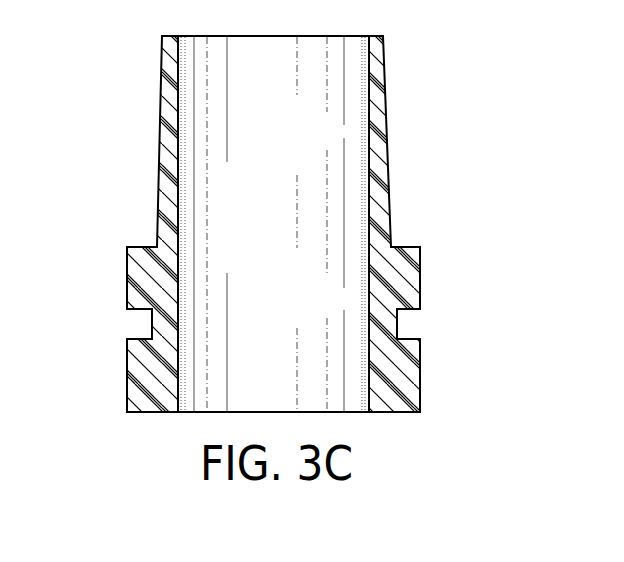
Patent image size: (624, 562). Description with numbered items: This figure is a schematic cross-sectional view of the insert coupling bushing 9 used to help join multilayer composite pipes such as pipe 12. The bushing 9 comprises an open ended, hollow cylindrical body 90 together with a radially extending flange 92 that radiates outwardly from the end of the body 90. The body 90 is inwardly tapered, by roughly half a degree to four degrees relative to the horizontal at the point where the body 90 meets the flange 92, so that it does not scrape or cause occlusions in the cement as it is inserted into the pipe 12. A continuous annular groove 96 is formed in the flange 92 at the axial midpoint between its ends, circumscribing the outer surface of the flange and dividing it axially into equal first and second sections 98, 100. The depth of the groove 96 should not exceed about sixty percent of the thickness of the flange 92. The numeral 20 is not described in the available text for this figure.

The coupling bushing 9 is at (151, 100).
The hollow cylindrical body 90 is at (377, 85).
The radially extending flange 92 is at (127, 246).
The second section 100 is at (127, 283).
The flange 20 is at (420, 289).
The annular groove 96 is at (397, 329).
The multilayer composite pipe 12 is at (127, 371).
The first section 98 is at (420, 379).